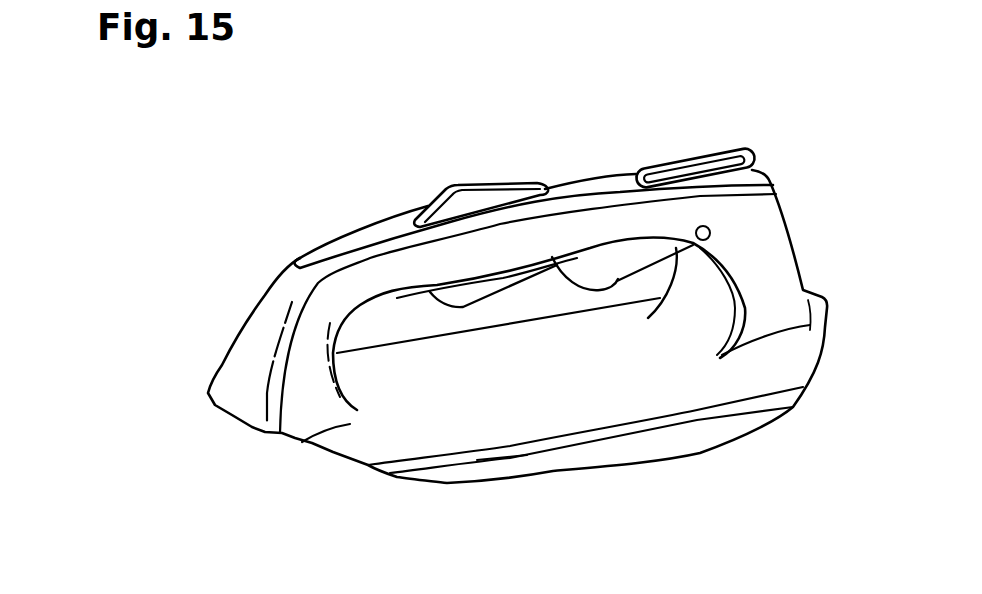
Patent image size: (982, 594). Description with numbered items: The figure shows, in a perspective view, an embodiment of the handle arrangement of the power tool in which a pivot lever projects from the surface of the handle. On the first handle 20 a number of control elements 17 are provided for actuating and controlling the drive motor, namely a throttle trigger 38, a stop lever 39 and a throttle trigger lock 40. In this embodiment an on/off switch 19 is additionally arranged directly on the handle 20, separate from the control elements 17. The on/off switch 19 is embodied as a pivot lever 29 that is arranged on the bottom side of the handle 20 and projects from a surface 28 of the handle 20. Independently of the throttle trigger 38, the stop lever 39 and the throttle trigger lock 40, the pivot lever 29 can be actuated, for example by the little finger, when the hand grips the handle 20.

The first handle 20 is at (347, 218).
The throttle trigger lock 40 is at (460, 185).
The control elements 17 is at (602, 226).
The stop lever 39 is at (710, 148).
The surface of the handle 28 is at (420, 273).
The pivot lever 29 is at (498, 287).
The throttle trigger 38 is at (611, 272).
The on/off switch 19 is at (487, 362).